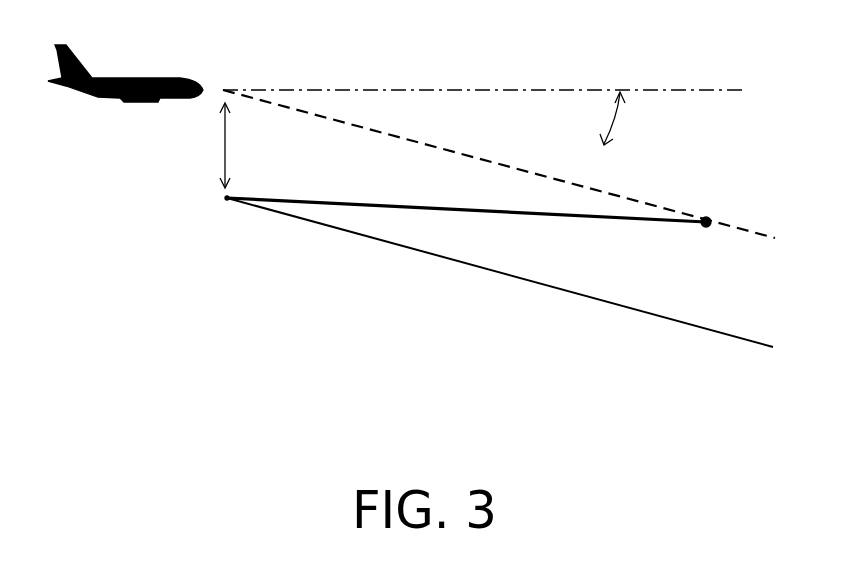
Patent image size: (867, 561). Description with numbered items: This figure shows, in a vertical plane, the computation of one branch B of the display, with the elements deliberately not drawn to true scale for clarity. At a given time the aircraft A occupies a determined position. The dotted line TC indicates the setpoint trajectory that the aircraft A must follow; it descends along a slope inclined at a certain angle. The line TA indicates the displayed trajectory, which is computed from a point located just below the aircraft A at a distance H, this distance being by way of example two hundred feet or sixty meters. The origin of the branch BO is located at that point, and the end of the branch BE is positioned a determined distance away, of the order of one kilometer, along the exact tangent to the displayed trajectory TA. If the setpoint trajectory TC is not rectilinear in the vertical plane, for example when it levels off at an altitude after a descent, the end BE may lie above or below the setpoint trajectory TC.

The aircraft A is at (135, 78).
The distance H is at (216, 145).
The setpoint trajectory TC is at (364, 131).
The branch B is at (603, 220).
The origin of the branch BO is at (227, 200).
The end of the branch BE is at (706, 217).
The displayed trajectory TA is at (647, 312).